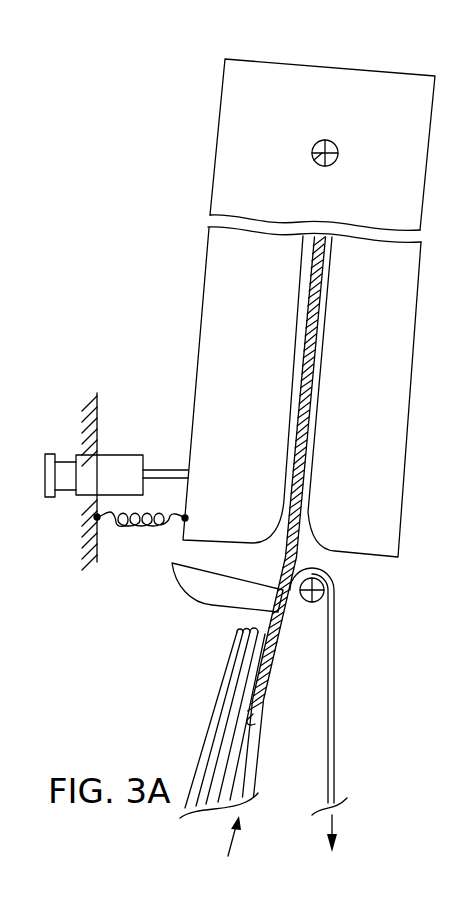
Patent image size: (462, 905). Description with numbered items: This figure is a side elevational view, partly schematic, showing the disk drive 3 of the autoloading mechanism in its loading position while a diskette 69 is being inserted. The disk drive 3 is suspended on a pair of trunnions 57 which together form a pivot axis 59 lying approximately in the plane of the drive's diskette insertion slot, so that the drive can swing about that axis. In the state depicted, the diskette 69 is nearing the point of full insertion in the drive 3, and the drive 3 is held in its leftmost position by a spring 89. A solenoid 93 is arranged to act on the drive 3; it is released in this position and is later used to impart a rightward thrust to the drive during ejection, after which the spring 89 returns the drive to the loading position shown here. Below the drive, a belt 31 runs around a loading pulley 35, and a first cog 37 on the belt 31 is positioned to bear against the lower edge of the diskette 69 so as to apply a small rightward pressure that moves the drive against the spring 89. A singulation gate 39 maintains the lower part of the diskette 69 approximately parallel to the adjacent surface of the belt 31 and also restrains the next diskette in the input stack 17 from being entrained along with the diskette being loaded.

The disk drive 3 is at (179, 275).
The input stack 17 is at (208, 729).
The belt 31 is at (334, 741).
The loading pulley 35 is at (316, 605).
The first cog 37 is at (262, 725).
The singulation gate 39 is at (212, 601).
The trunnions 57 is at (314, 143).
The pivot axis 59 is at (313, 159).
The diskette 69 is at (284, 569).
The spring 89 is at (148, 528).
The solenoid 93 is at (139, 444).